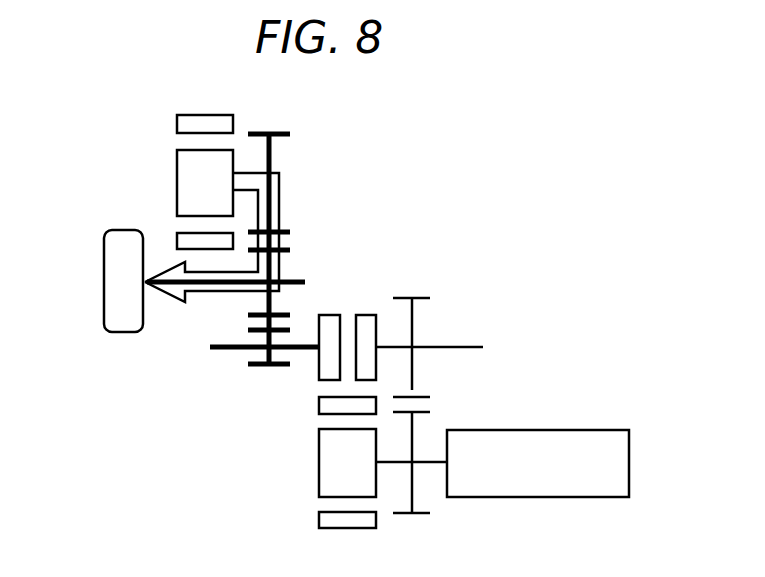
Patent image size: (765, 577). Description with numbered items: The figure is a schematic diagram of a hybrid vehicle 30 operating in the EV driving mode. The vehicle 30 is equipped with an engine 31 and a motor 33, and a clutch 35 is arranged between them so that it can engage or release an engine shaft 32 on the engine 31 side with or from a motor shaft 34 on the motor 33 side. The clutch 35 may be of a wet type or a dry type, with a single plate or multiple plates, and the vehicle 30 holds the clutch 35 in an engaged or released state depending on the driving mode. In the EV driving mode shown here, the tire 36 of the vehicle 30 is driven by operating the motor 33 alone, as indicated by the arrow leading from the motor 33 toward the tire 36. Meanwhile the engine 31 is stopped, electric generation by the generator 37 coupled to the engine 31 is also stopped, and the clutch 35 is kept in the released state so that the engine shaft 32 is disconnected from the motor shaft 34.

The vehicle 30 is at (520, 193).
The engine 31 is at (629, 460).
The engine shaft 32 is at (455, 347).
The motor 33 is at (176, 184).
The motor shaft 34 is at (233, 349).
The clutch 35 is at (300, 373).
The tire 36 is at (104, 283).
The generator 37 is at (319, 463).